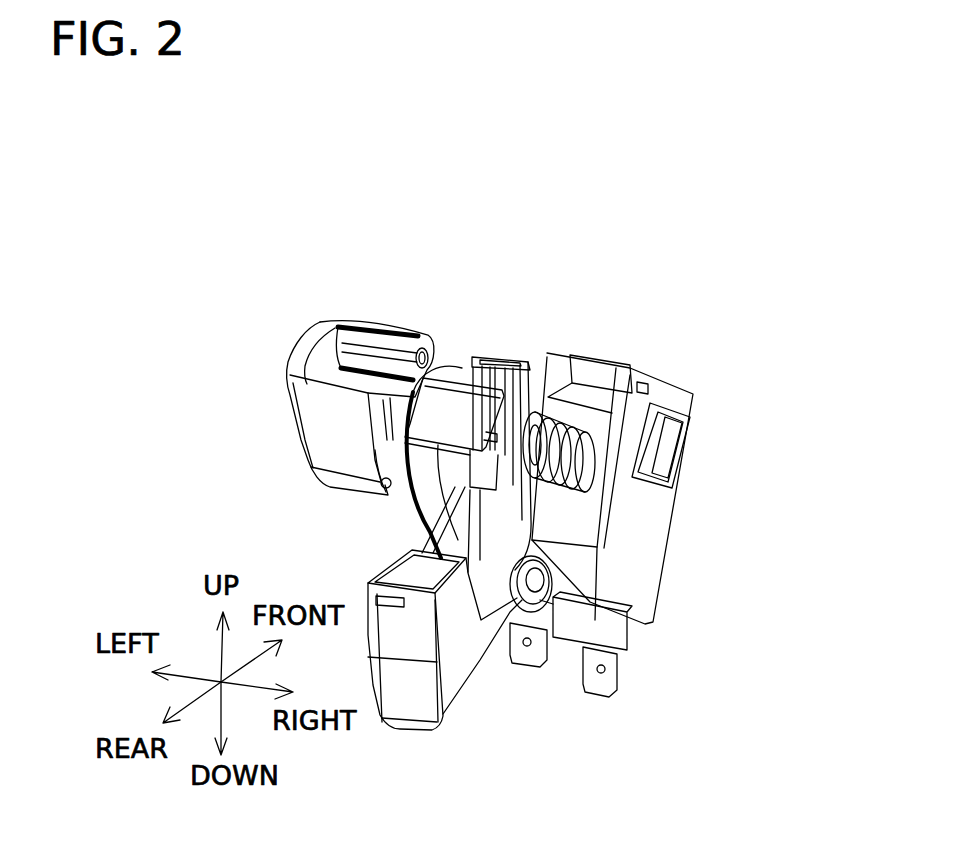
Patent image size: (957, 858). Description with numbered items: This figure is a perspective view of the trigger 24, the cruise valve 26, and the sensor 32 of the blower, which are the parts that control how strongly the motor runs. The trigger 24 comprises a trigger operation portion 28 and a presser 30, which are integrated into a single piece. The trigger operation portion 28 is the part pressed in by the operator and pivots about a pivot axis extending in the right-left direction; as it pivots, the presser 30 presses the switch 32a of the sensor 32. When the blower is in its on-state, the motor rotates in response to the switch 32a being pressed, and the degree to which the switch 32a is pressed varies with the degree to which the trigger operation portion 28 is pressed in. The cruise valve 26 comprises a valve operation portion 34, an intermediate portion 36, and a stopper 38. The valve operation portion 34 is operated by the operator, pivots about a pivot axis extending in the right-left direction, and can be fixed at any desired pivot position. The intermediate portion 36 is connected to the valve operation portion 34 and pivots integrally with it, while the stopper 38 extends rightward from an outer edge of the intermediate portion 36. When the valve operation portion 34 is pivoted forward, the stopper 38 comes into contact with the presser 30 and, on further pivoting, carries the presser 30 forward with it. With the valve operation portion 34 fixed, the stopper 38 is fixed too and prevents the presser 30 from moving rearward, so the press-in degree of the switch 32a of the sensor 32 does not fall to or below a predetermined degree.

The trigger 24 is at (483, 732).
The cruise valve 26 is at (258, 454).
The trigger operation portion 28 is at (403, 710).
The presser 30 is at (545, 450).
The sensor 32 is at (647, 580).
The switch 32a is at (545, 447).
The valve operation portion 34 is at (377, 358).
The intermediate portion 36 is at (427, 497).
The stopper 38 is at (458, 397).